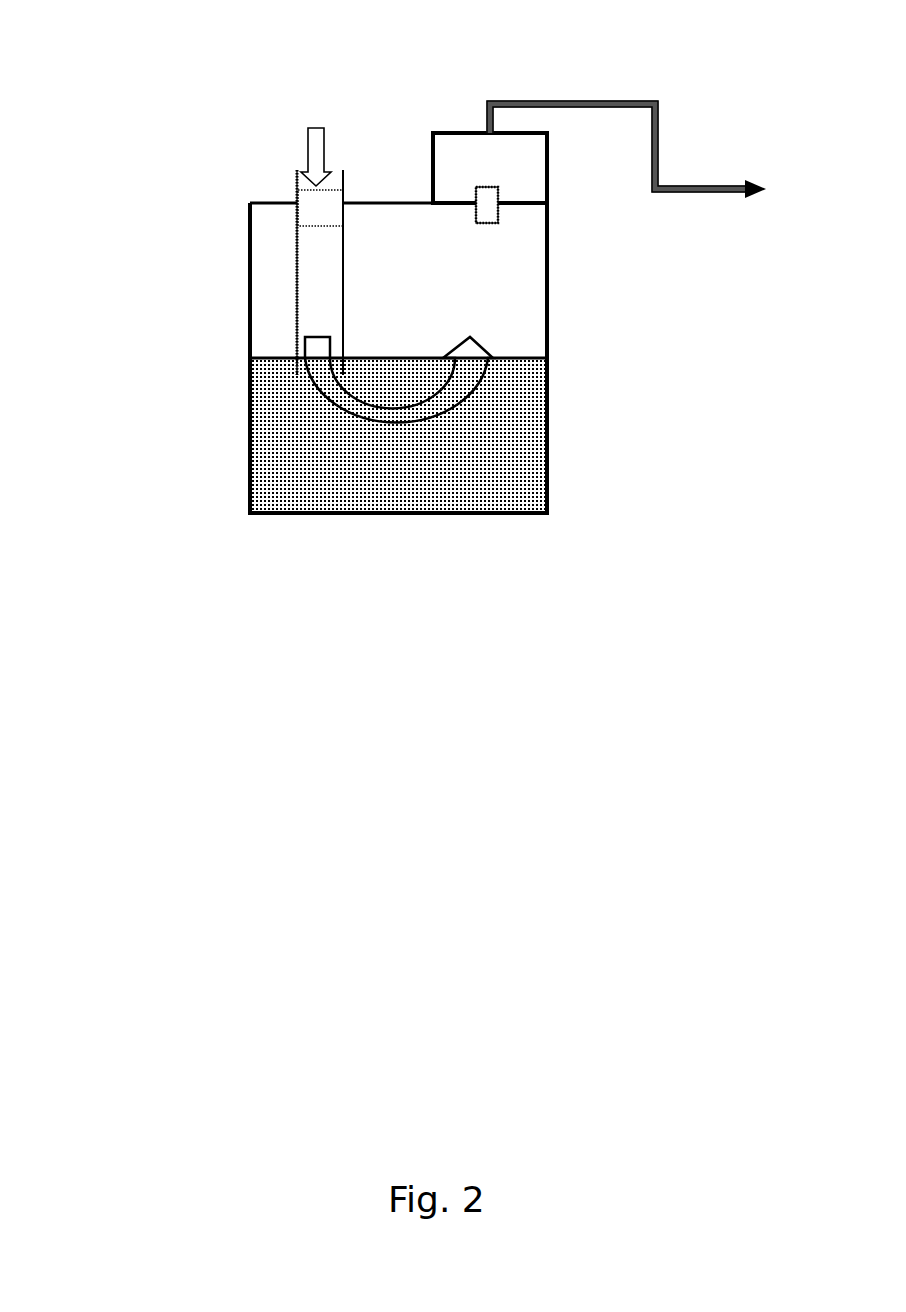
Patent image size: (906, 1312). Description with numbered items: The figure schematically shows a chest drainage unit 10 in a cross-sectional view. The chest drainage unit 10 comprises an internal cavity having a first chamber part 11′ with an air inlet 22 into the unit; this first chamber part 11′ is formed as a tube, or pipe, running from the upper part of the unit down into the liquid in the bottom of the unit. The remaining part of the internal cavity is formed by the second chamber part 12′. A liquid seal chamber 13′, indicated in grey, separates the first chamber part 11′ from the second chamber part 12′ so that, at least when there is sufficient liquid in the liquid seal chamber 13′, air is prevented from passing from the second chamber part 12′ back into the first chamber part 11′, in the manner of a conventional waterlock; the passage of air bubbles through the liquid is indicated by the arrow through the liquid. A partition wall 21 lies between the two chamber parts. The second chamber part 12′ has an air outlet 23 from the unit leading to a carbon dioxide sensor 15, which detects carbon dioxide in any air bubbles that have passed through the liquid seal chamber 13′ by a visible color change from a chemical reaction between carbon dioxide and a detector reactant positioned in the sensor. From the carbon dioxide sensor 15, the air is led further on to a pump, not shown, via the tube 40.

The chest drainage unit 10 is at (153, 53).
The first chamber part 11′ is at (300, 275).
The second chamber part 12′ is at (445, 280).
The liquid seal chamber 13′ is at (398, 435).
The carbon dioxide sensor 15 is at (440, 116).
The partition wall 21 is at (284, 249).
The air inlet 22 is at (326, 214).
The air outlet 23 is at (512, 226).
The tube 40 is at (606, 86).